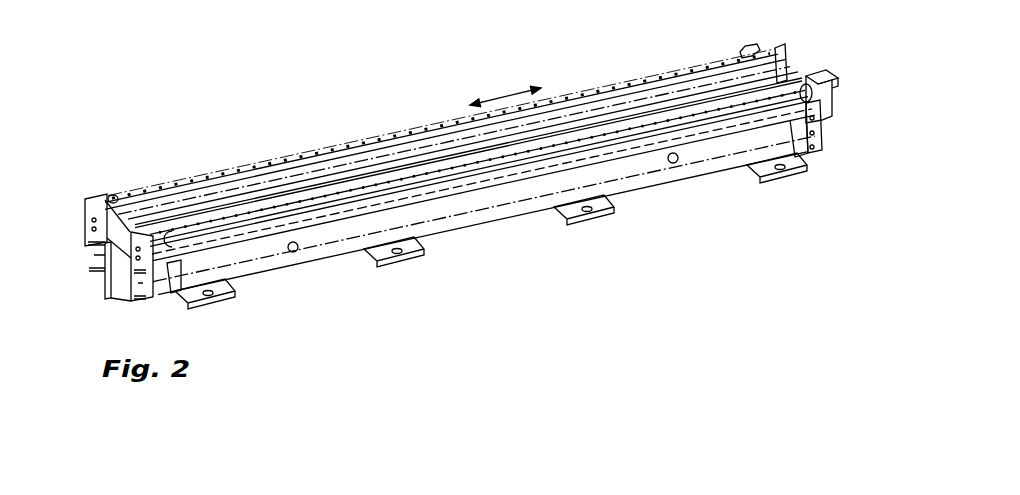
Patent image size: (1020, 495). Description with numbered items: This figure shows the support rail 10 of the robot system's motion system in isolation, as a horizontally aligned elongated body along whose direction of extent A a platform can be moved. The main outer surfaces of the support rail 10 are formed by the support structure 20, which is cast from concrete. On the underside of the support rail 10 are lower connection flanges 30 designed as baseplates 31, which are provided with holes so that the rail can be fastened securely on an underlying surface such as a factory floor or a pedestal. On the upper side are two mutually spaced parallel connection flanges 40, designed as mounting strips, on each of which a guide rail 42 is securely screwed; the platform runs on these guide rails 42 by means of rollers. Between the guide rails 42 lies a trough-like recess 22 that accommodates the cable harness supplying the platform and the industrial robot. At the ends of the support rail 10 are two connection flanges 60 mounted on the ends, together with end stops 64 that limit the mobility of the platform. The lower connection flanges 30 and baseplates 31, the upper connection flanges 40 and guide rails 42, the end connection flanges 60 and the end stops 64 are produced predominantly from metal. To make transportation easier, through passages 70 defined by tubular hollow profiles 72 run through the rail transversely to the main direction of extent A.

The support rail 10 is at (355, 96).
The support structure 20 is at (460, 138).
The trough-like recess 22 is at (614, 117).
The connection flanges 30 is at (521, 260).
The baseplates 31 is at (225, 298).
The connection flanges 40 is at (230, 232).
The guide rail 42 is at (167, 192).
The connection flanges 60 is at (118, 270).
The end stops 64 is at (92, 212).
The through passages 70 is at (300, 256).
The tubular hollow profiles 72 is at (298, 250).
The direction of extent A is at (513, 92).